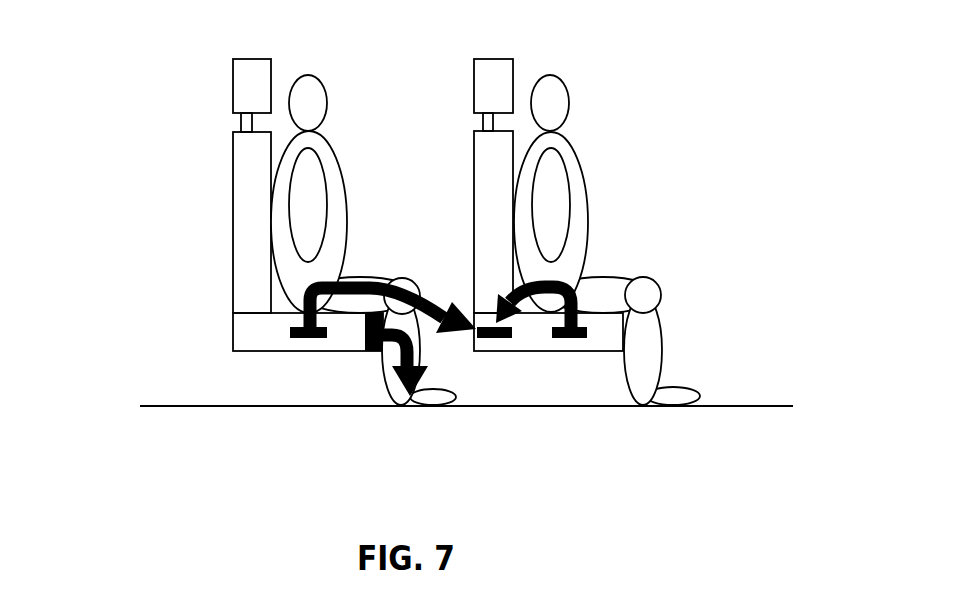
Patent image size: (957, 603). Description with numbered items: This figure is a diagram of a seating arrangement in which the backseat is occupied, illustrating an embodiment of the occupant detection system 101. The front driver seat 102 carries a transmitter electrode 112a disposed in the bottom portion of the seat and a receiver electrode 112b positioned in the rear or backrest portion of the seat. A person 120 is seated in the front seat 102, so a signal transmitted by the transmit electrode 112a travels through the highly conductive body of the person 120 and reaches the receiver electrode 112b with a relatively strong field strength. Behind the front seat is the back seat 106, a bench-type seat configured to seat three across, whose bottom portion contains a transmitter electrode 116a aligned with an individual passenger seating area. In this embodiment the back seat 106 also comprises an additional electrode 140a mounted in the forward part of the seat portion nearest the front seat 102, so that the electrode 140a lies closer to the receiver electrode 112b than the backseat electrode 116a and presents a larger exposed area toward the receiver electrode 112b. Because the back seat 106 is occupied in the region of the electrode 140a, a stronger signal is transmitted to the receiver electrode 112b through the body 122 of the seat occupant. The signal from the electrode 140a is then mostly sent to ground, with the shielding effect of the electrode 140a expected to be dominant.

The occupant detection system 101 is at (98, 92).
The driver seat 102 is at (474, 75).
The back seat 106 is at (233, 75).
The person 120 is at (568, 148).
The body of the seat occupant 122 is at (327, 145).
The transmitter electrode 112a is at (558, 337).
The receiver electrode 112b is at (492, 337).
The transmitter electrode 116a is at (300, 337).
The additional electrode 140a is at (372, 351).